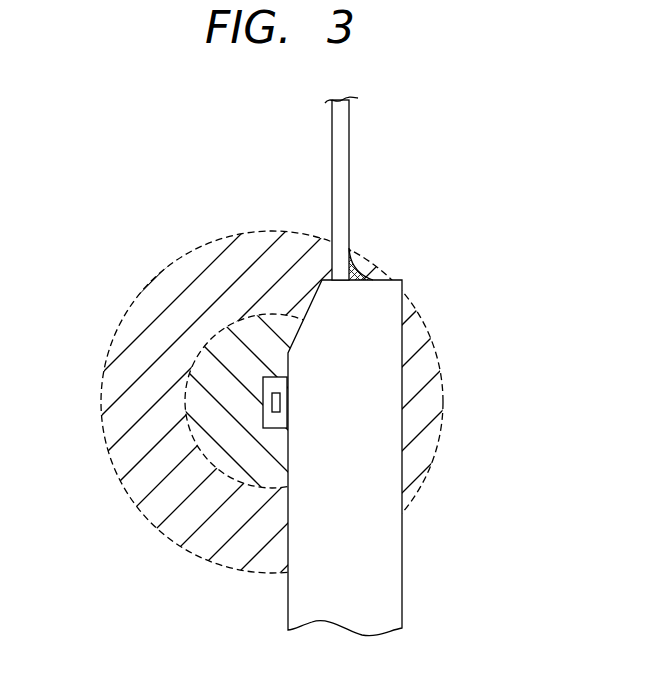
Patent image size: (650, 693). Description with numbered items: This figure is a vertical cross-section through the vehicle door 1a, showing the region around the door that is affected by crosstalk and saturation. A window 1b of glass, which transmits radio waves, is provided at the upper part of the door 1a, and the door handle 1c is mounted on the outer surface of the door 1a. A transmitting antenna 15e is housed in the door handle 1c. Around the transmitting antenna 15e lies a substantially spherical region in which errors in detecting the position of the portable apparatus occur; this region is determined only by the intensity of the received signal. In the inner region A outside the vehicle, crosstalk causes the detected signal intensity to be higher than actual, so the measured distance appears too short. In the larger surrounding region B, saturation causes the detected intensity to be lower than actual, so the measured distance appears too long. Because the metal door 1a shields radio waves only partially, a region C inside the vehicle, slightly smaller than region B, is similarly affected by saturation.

The door 1a is at (288, 600).
The window 1b is at (332, 141).
The door handle 1c is at (277, 377).
The transmitting antenna 15e is at (280, 402).
The region A is at (191, 436).
The region B is at (108, 348).
The region C is at (365, 262).